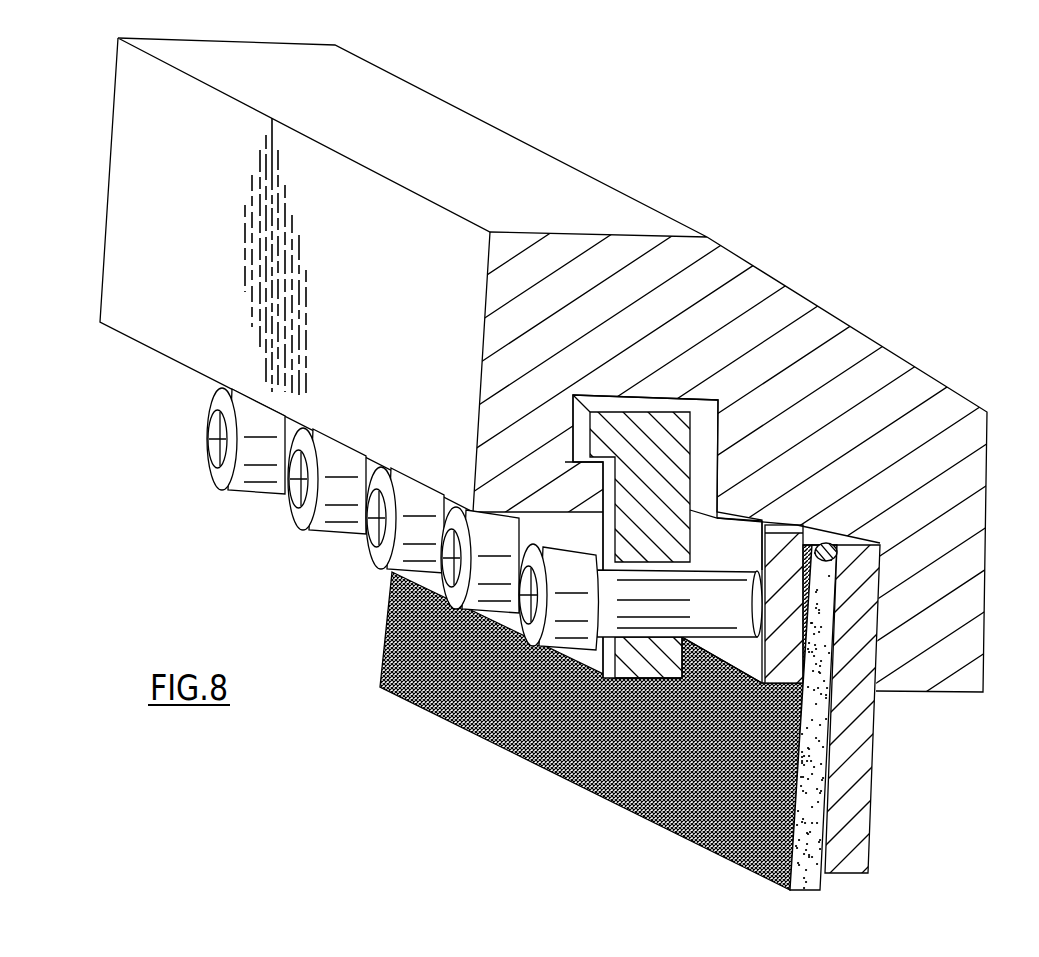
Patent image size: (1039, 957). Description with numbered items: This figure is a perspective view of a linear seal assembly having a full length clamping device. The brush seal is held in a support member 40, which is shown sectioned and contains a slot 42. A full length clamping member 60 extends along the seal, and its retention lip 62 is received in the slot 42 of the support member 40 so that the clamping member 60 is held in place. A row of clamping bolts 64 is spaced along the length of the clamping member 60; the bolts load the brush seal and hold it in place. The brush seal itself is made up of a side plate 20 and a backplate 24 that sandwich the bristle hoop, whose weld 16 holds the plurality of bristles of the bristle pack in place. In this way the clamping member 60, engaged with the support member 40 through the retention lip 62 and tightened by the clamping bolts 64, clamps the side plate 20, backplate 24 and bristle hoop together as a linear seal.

The support member 40 is at (933, 378).
The slot 42 is at (703, 417).
The retention lip 62 is at (575, 428).
The full length clamping member 60 is at (655, 517).
The side plate 20 is at (740, 658).
The weld 16 is at (835, 540).
The backplate 24 is at (870, 840).
The clamping bolts 64 is at (216, 490).